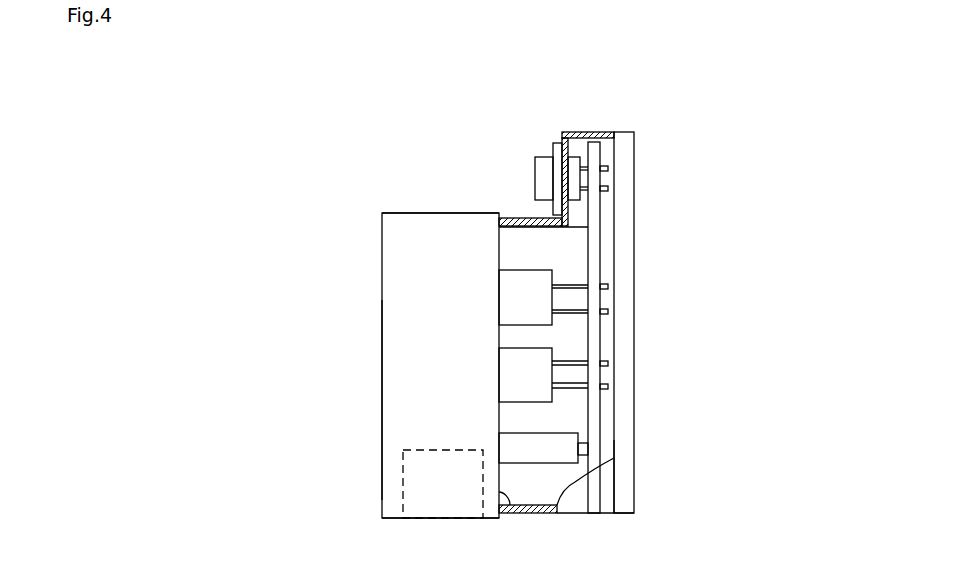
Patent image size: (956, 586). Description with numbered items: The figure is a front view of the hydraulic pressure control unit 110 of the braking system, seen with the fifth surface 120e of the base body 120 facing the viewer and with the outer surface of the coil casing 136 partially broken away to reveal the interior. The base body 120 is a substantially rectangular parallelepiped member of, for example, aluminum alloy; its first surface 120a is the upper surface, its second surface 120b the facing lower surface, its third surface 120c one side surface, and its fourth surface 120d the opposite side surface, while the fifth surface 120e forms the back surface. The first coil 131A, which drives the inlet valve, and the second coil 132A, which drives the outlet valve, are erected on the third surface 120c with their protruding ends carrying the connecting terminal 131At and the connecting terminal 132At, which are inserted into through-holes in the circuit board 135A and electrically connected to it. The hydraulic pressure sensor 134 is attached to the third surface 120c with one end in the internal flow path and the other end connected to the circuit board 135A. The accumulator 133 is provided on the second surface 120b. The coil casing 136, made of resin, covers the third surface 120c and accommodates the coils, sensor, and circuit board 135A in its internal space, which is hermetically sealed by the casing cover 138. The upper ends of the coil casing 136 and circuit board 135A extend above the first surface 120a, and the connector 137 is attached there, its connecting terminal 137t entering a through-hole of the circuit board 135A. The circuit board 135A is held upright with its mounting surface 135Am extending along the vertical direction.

The hydraulic pressure control unit 110 is at (452, 126).
The base body 120 is at (412, 280).
The first surface 120a is at (423, 212).
The second surface 120b is at (423, 520).
The third surface 120c is at (512, 505).
The fourth surface 120d is at (380, 381).
The fifth surface 120e is at (398, 418).
The first coil 131A is at (540, 280).
The connecting terminal 131At is at (603, 288).
The second coil 132A is at (540, 357).
The connecting terminal 132At is at (603, 365).
The accumulator 133 is at (403, 485).
The hydraulic pressure sensor 134 is at (555, 452).
The circuit board 135A is at (620, 134).
The mounting surface 135Am is at (600, 207).
The coil casing 136 is at (587, 498).
The connector 137 is at (545, 163).
The connecting terminal 137t is at (603, 168).
The casing cover 138 is at (625, 472).